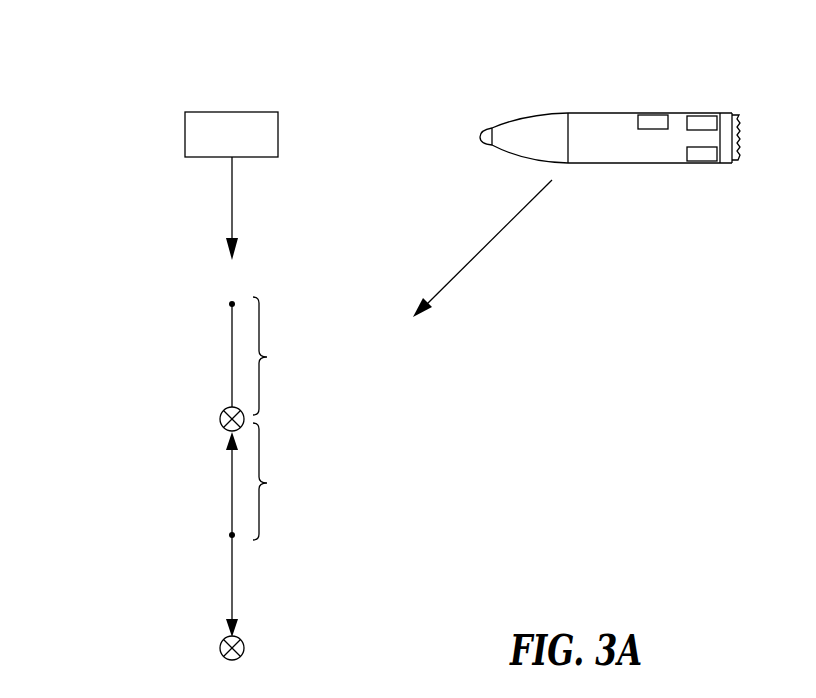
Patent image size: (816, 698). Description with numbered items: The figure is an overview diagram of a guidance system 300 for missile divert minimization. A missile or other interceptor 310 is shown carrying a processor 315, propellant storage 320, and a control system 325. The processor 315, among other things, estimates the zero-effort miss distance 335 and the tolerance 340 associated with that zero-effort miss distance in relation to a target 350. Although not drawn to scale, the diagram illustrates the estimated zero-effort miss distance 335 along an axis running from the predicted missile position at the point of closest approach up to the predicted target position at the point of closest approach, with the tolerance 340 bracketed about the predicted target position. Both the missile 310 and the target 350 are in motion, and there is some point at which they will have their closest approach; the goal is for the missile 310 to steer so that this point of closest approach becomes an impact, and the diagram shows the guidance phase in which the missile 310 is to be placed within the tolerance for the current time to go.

The guidance system 300 is at (100, 48).
The missile 310 is at (527, 117).
The processor 315 is at (652, 115).
The propellant storage 320 is at (702, 114).
The control system 325 is at (700, 162).
The zero-effort miss distance 335 is at (332, 520).
The tolerance 340 is at (278, 418).
The target 350 is at (185, 133).